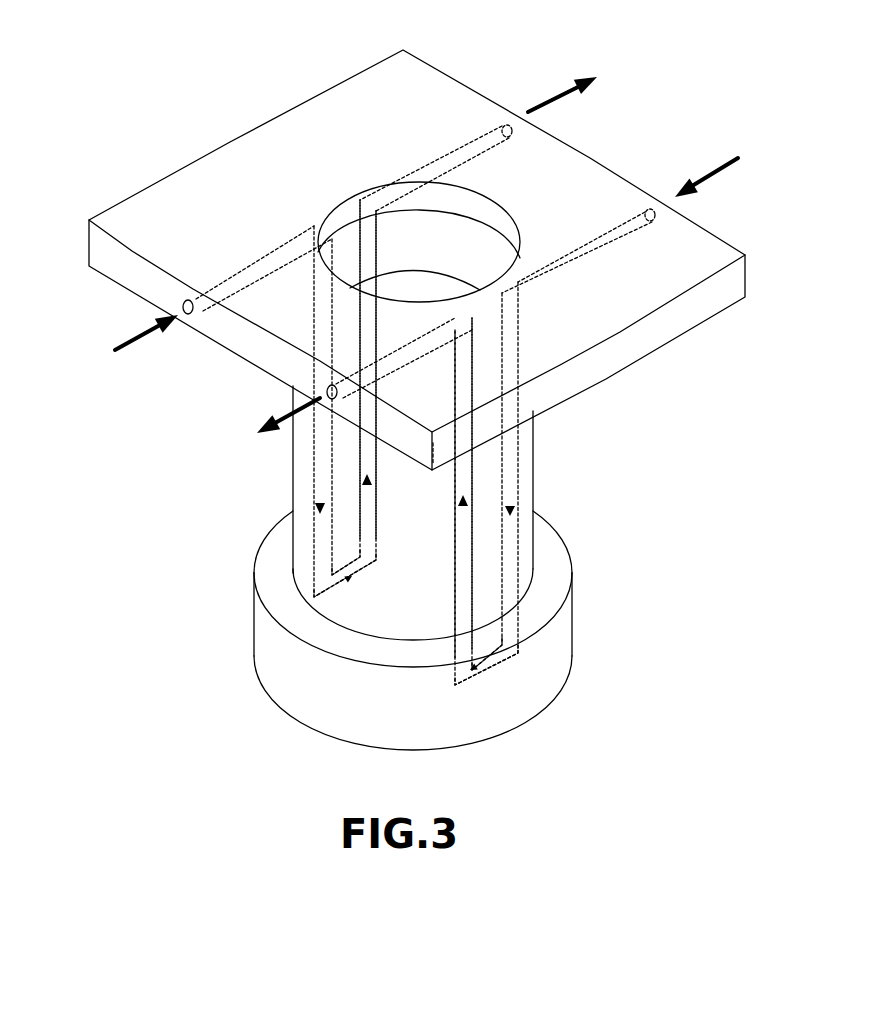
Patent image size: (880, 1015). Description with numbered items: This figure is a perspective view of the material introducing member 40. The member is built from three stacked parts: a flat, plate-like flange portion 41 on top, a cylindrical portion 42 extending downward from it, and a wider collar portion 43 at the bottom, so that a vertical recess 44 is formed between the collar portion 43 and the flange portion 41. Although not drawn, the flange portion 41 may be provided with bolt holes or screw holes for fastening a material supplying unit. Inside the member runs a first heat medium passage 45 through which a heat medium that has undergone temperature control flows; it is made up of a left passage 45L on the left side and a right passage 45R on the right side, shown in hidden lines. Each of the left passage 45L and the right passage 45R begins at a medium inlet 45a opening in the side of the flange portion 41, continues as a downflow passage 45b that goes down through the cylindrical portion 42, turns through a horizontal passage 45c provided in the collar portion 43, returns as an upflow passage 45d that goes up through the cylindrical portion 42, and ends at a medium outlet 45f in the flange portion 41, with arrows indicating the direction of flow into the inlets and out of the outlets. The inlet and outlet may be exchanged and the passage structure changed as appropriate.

The material introducing member 40 is at (186, 66).
The flange portion 41 is at (568, 173).
The cylindrical portion 42 is at (300, 499).
The vertical recess 44 is at (300, 494).
The collar portion 43 is at (322, 706).
The first heat medium passage 45 is at (291, 466).
The left passage 45L is at (291, 466).
The right passage 45R is at (541, 498).
The medium inlet 45a is at (182, 304).
The downflow passage 45b is at (316, 342).
The horizontal passage 45c is at (345, 590).
The upflow passage 45d is at (376, 513).
The medium outlet 45f is at (505, 125).